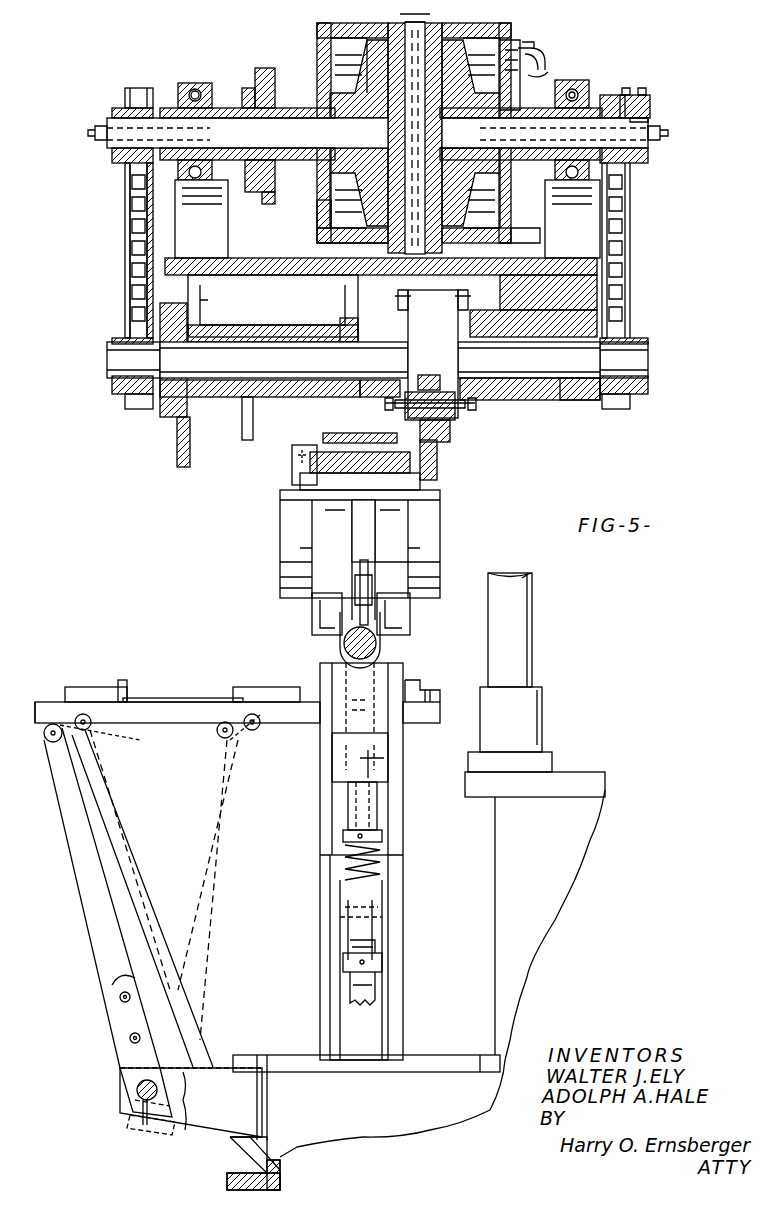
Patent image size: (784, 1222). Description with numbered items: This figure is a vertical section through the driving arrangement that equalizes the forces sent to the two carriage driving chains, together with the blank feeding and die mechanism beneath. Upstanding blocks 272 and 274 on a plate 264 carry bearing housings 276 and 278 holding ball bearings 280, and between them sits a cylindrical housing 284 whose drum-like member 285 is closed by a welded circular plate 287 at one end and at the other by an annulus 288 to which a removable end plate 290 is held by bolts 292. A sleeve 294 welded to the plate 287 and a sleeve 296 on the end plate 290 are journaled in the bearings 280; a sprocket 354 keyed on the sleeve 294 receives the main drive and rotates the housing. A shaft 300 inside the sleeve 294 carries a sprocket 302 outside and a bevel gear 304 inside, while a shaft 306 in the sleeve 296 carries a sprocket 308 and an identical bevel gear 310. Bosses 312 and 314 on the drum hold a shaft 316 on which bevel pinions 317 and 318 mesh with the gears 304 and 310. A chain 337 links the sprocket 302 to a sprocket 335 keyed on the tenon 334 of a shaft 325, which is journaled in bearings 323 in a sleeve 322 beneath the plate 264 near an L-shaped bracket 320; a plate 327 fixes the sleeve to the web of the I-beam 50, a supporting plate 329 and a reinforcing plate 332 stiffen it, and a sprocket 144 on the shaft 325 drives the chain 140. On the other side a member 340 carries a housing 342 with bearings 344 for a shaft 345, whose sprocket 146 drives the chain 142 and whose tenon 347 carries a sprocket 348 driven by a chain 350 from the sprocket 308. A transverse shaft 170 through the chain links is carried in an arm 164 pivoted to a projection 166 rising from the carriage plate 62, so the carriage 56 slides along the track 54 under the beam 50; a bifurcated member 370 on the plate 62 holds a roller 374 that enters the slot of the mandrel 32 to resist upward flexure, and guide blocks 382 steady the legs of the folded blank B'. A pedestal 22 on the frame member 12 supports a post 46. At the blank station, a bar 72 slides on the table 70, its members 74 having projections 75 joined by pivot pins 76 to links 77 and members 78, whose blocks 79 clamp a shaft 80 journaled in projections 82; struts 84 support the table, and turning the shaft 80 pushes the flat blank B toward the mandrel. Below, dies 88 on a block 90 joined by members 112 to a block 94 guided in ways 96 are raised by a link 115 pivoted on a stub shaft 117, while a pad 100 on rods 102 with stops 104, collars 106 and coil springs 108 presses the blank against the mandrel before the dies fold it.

The channel shaped structural member 12 is at (282, 1172).
The pedestal 22 is at (598, 822).
The mandrel 32 is at (380, 641).
The post 46 is at (532, 658).
The I-shaped beam 50 is at (343, 302).
The plate 54 is at (320, 462).
The carriage 56 is at (270, 544).
The plate 62 is at (312, 500).
The table 70 is at (52, 702).
The bar 72 is at (127, 690).
The member 74 is at (90, 687).
The projection 75 is at (125, 725).
The pivot pin 76 is at (95, 730).
The link 77 is at (90, 740).
The member 78 is at (80, 885).
The block 79 is at (437, 700).
The shaft 80 is at (137, 1088).
The projection 82 is at (207, 1128).
The strut 84 is at (110, 822).
The die member 88 is at (320, 660).
The block 90 is at (385, 770).
The block 94 is at (330, 890).
The way 96 is at (402, 938).
The pad member 100 is at (340, 675).
The rod 102 is at (330, 746).
The stop 104 is at (384, 966).
The collar 106 is at (343, 835).
The coil spring 108 is at (343, 850).
The member 112 is at (345, 797).
The link 115 is at (375, 995).
The stub shaft 117 is at (340, 920).
The chain 140 is at (395, 305).
The chain 142 is at (456, 298).
The sprocket 144 is at (365, 400).
The sprocket 146 is at (475, 410).
The connecting arm 164 is at (442, 390).
The projection 166 is at (412, 380).
The shaft 170 is at (452, 432).
The plate 264 is at (595, 266).
The block 272 is at (222, 240).
The block 274 is at (592, 222).
The housing 276 is at (196, 80).
The housing 278 is at (585, 108).
The ball bearing 280 is at (190, 92).
The housing 284 is at (322, 243).
The drum-like member 285 is at (338, 30).
The circular plate 287 is at (320, 230).
The annulus 288 is at (535, 244).
The end plate 290 is at (520, 84).
The bolt 292 is at (522, 44).
The sleeve 294 is at (232, 160).
The sleeve 296 is at (605, 95).
The shaft 300 is at (300, 118).
The sprocket 302 is at (118, 160).
The bevel gear 304 is at (330, 207).
The shaft 306 is at (650, 160).
The sprocket 308 is at (650, 106).
The bevel gear 310 is at (470, 170).
The boss portion 312 is at (432, 24).
The boss portion 314 is at (448, 230).
The shaft 316 is at (405, 26).
The bevel pinion 317 is at (330, 42).
The bevel pinion 318 is at (368, 232).
The L-shaped bracket 320 is at (203, 285).
The sleeve 322 is at (242, 328).
The bearing 323 is at (178, 432).
The shaft 325 is at (310, 370).
The plate 327 is at (348, 322).
The supporting plate 329 is at (177, 460).
The reinforcing plate 332 is at (246, 438).
The tenon portion 334 is at (115, 353).
The sprocket 335 is at (118, 384).
The driving chain 337 is at (138, 225).
The member 340 is at (598, 290).
The housing 342 is at (578, 400).
The bearing 344 is at (532, 395).
The shaft 345 is at (529, 360).
The tenon 347 is at (652, 352).
The sprocket 348 is at (645, 385).
The driving chain 350 is at (618, 210).
The sprocket 354 is at (265, 68).
The bifurcated member 370 is at (360, 524).
The roller 374 is at (360, 565).
The guide block 382 is at (318, 617).
The blank B is at (237, 688).
The U-shaped blank B' is at (427, 610).